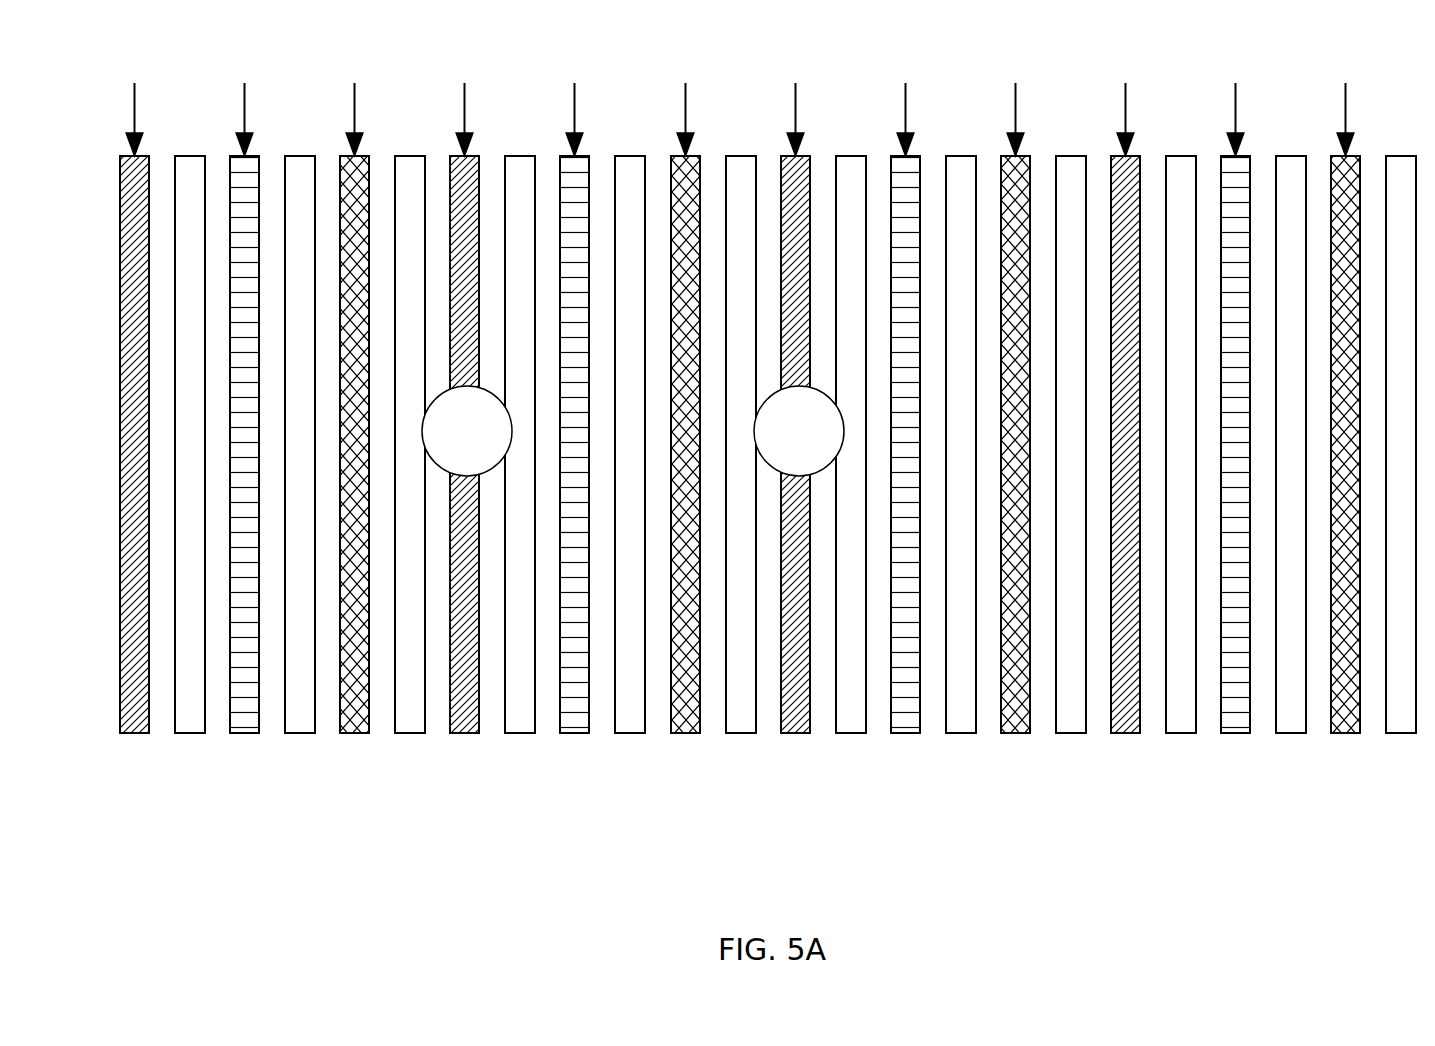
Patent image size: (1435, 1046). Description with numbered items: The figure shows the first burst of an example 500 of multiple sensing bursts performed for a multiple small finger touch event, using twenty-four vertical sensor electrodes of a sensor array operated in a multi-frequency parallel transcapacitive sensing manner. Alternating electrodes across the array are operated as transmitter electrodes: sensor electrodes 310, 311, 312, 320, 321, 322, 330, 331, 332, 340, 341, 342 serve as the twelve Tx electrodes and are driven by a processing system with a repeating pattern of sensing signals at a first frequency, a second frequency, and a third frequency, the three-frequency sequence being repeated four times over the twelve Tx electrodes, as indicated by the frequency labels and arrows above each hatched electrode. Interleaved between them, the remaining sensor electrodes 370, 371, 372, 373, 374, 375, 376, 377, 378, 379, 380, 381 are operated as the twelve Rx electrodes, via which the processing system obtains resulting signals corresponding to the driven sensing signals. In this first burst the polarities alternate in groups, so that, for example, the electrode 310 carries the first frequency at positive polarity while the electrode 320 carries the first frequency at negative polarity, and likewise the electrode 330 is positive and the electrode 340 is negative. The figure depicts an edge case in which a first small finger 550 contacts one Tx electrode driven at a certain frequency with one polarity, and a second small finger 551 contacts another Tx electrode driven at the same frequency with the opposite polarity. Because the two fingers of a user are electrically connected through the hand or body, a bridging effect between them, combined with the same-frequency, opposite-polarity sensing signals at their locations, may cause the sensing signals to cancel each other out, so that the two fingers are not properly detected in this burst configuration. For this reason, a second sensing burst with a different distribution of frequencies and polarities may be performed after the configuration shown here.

The example of multiple sensing bursts 500 is at (768, 494).
The sensor electrode 310 is at (132, 735).
The sensor electrode 311 is at (242, 735).
The sensor electrode 312 is at (352, 735).
The sensor electrode 320 is at (462, 735).
The sensor electrode 321 is at (572, 735).
The sensor electrode 322 is at (683, 735).
The sensor electrode 330 is at (793, 735).
The sensor electrode 331 is at (903, 735).
The sensor electrode 332 is at (1013, 735).
The sensor electrode 340 is at (1123, 735).
The sensor electrode 341 is at (1233, 735).
The sensor electrode 342 is at (1343, 735).
The sensor electrode 370 is at (195, 735).
The sensor electrode 371 is at (305, 735).
The sensor electrode 372 is at (415, 735).
The sensor electrode 373 is at (525, 735).
The sensor electrode 374 is at (635, 735).
The sensor electrode 375 is at (746, 735).
The sensor electrode 376 is at (856, 735).
The sensor electrode 377 is at (966, 735).
The sensor electrode 378 is at (1076, 735).
The sensor electrode 379 is at (1186, 735).
The sensor electrode 380 is at (1296, 735).
The sensor electrode 381 is at (1406, 735).
The first small finger 550 is at (467, 431).
The second small finger 551 is at (799, 431).